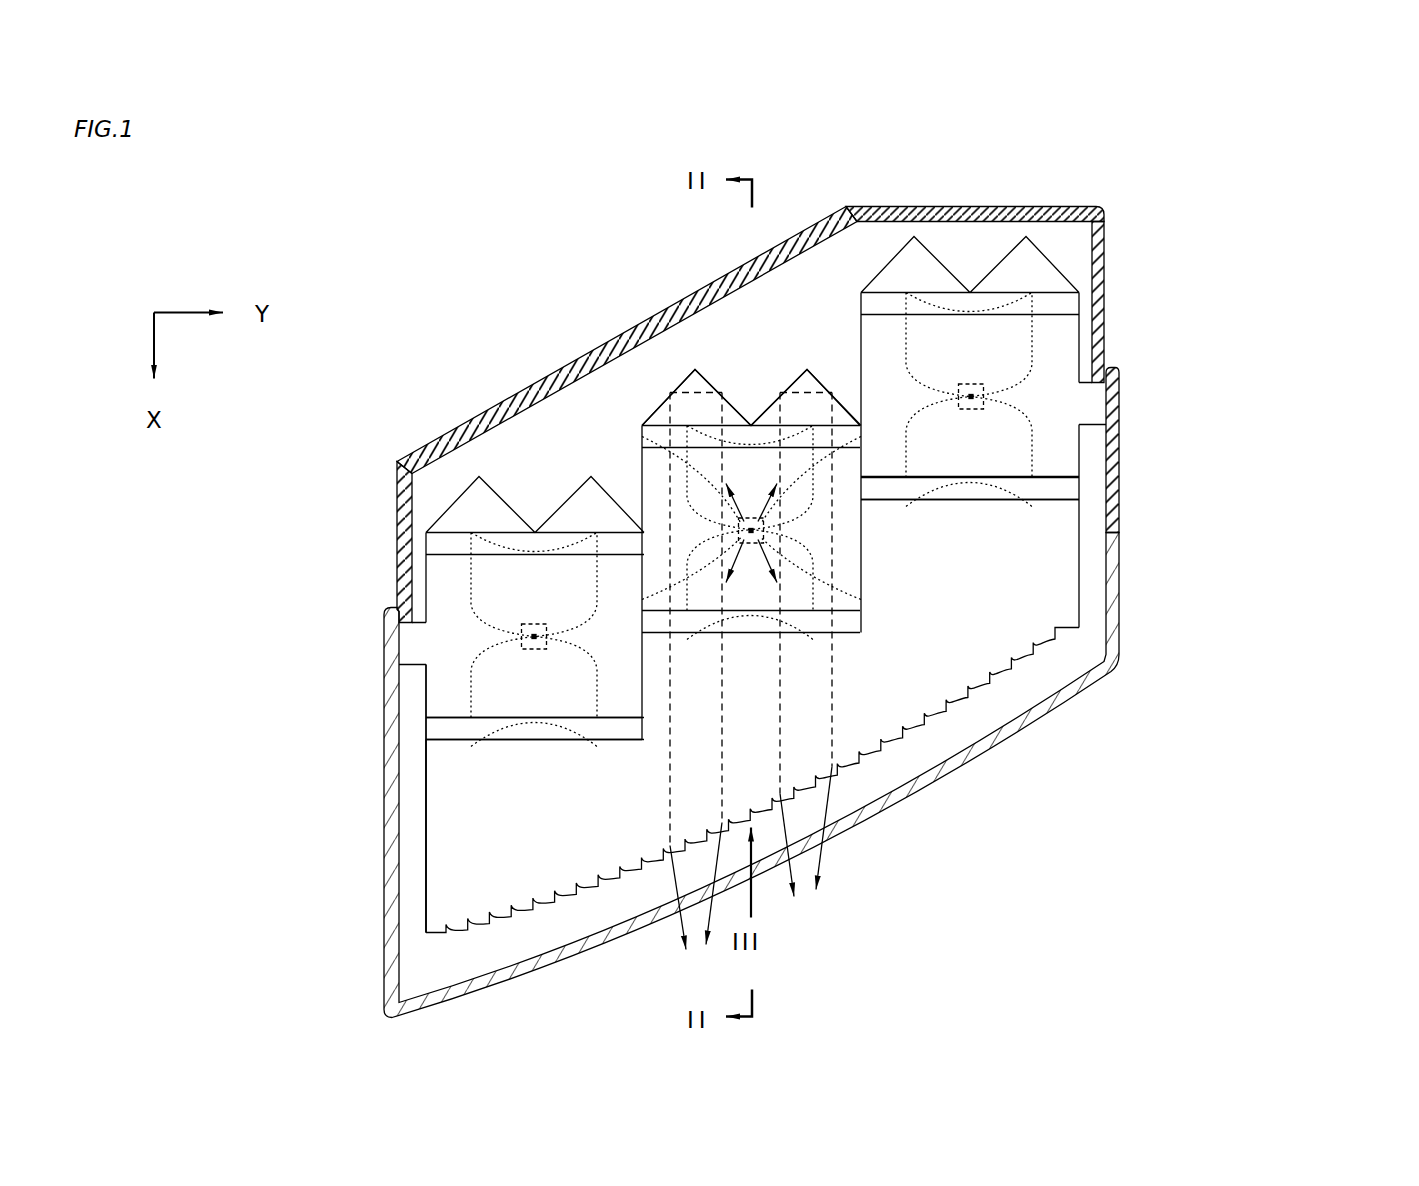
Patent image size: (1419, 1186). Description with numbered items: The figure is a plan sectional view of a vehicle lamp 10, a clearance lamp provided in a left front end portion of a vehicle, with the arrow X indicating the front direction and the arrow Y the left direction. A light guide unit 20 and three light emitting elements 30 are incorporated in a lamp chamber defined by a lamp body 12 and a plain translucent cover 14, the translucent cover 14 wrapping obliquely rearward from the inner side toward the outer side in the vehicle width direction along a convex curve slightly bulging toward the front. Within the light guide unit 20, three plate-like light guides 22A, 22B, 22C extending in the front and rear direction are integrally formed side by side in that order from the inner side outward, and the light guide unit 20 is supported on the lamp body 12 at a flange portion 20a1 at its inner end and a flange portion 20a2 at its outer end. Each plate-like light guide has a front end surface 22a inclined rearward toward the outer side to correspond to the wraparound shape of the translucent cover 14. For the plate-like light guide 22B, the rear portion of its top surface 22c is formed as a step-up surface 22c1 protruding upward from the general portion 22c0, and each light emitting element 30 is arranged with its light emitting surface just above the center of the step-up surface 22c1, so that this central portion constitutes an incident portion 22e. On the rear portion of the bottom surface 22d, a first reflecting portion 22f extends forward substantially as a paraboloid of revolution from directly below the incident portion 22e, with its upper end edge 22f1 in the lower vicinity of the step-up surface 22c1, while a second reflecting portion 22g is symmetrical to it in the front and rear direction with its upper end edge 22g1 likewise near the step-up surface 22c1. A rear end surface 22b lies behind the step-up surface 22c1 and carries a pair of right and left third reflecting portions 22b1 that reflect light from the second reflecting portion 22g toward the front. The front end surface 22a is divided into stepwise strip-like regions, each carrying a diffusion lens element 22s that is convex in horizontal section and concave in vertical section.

The vehicle lamp 10 is at (427, 288).
The lamp body 12 is at (397, 458).
The translucent cover 14 is at (845, 837).
The light guide unit 20 is at (1392, 602).
The flange portion 20a1 is at (410, 645).
The flange portion 20a2 is at (1093, 405).
The plate-like light guide 22A is at (647, 693).
The plate-like light guide 22B is at (866, 590).
The plate-like light guide 22C is at (1083, 452).
The front end surface 22a is at (633, 860).
The rear end surface 22b is at (702, 392).
The third reflecting portions 22b1 is at (796, 380).
The top surface 22c is at (228, 697).
The general portion 22c0 is at (482, 798).
The step-up surface 22c1 is at (450, 672).
The bottom surface 22d is at (482, 870).
The incident portion 22e is at (752, 517).
The first reflecting portion 22f is at (751, 695).
The upper end edge 22f1 is at (712, 517).
The second reflecting portion 22g is at (678, 472).
The upper end edge 22g1 is at (700, 512).
The diffusion lens element 22s is at (525, 904).
The light emitting element 30 is at (542, 657).